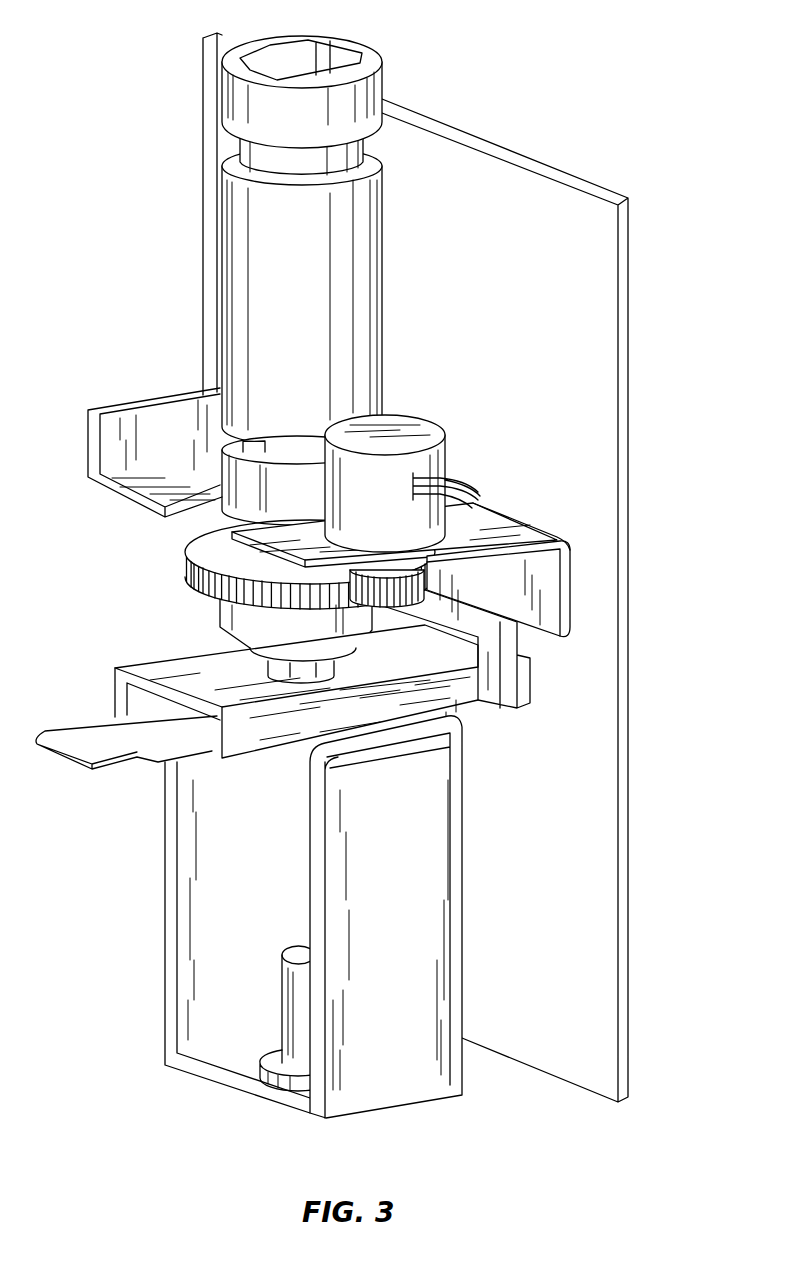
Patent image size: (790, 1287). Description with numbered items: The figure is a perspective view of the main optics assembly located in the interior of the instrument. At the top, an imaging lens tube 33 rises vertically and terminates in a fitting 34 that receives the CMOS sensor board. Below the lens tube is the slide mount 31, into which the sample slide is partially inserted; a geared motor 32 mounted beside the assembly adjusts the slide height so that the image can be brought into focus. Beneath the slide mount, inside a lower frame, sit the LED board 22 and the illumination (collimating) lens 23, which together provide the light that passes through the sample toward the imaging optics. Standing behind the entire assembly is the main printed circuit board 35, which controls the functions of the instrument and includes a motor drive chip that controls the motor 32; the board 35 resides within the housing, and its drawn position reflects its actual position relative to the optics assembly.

The LED board 22 is at (275, 1049).
The illumination (collimating) lens 23 is at (283, 975).
The slide mount 31 is at (150, 664).
The geared motor 32 is at (443, 453).
The imaging lens tube 33 is at (222, 292).
The fitting 34 is at (383, 83).
The main printed circuit board 35 is at (629, 231).